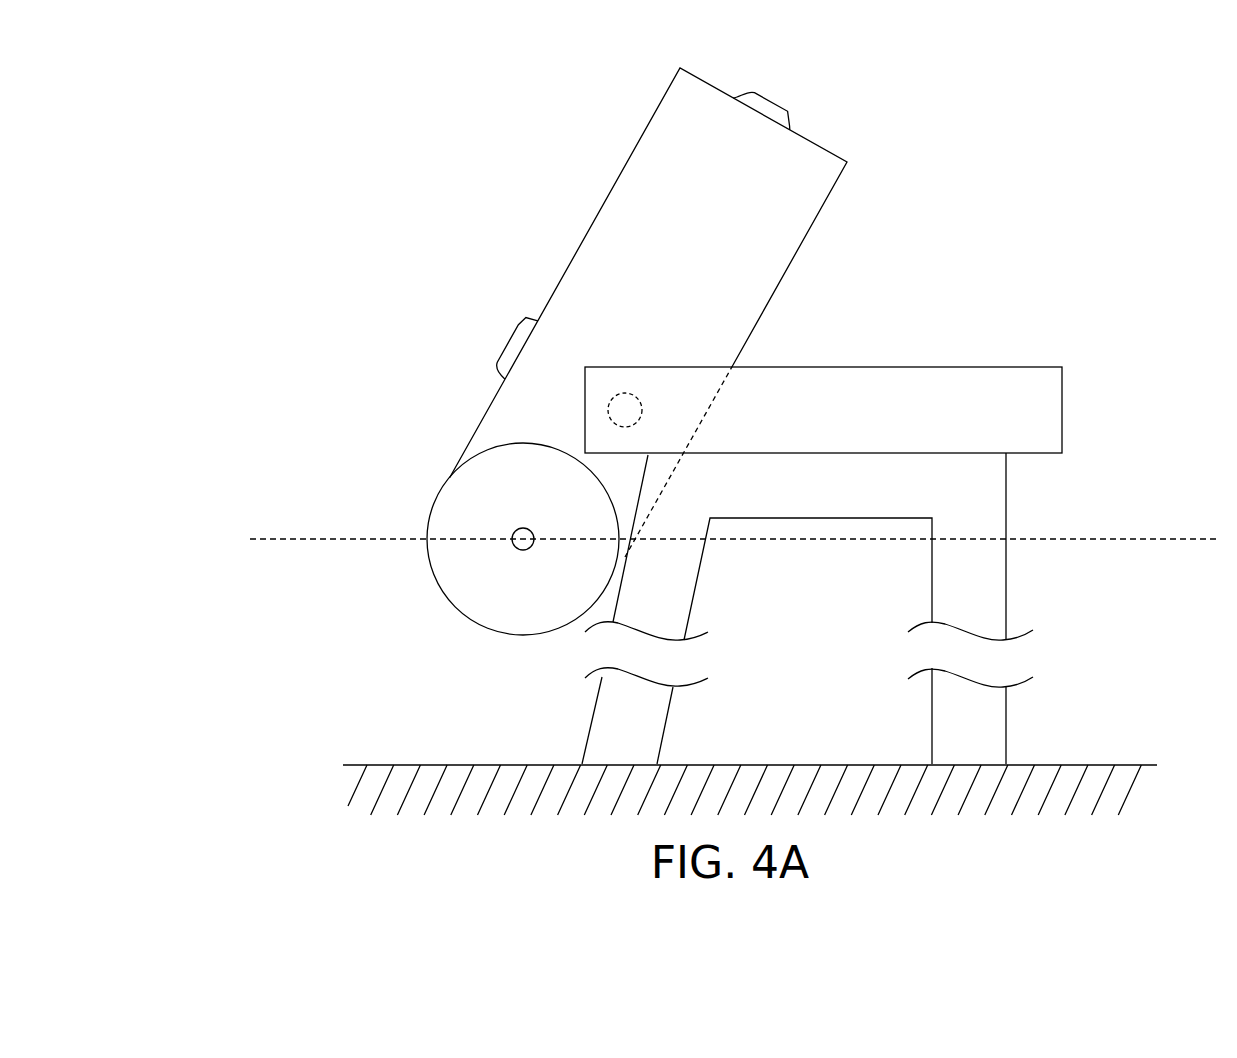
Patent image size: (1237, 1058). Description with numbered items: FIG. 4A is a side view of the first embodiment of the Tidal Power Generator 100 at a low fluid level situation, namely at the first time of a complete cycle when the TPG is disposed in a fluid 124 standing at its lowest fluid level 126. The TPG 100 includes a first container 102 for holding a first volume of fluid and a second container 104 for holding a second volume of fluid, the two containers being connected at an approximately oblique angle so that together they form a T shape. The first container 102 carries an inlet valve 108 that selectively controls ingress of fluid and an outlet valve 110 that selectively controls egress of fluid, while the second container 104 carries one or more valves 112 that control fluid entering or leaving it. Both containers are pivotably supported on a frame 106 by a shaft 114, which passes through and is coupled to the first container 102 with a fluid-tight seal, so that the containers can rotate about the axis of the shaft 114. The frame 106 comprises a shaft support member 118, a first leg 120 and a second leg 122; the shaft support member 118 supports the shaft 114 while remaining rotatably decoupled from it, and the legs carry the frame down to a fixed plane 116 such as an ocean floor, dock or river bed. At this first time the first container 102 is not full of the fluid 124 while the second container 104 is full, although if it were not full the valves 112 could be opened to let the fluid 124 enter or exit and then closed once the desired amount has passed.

The Tidal Power Generator 100 is at (342, 277).
The first container 102 is at (632, 212).
The second container 104 is at (468, 502).
The frame 106 is at (1090, 377).
The inlet valve 108 is at (790, 123).
The outlet valve 110 is at (507, 348).
The valves 112 is at (512, 543).
The shaft 114 is at (610, 397).
The fixed plane 116 is at (453, 763).
The shaft support member 118 is at (873, 387).
The first leg 120 is at (672, 578).
The second leg 122 is at (985, 507).
The fluid 124 is at (310, 586).
The lowest fluid level 126 is at (1147, 538).